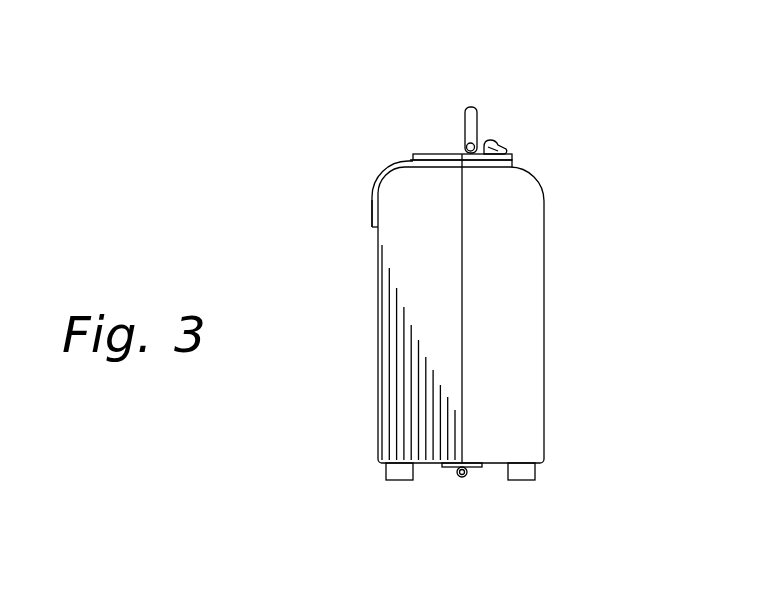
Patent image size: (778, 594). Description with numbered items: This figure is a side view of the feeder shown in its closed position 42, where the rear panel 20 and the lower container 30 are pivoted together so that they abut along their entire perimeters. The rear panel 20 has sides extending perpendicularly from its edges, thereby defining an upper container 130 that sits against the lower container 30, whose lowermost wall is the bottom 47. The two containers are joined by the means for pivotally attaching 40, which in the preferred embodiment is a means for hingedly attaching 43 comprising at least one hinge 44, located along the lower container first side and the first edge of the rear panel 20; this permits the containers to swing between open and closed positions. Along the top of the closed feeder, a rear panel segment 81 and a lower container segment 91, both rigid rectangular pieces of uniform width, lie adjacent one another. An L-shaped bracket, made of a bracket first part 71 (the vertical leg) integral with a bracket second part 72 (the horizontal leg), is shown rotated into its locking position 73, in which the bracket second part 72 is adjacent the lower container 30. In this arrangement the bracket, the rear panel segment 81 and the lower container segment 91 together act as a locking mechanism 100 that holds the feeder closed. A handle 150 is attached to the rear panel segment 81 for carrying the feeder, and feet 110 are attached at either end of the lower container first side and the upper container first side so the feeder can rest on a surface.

The rear panel 20 is at (546, 227).
The lower container 30 is at (377, 316).
The means for pivotally attaching 40 is at (400, 512).
The closed position 42 is at (588, 279).
The means for hingedly attaching 43 is at (443, 510).
The hinge 44 is at (464, 478).
The bottom 47 is at (377, 400).
The bracket first part 71 is at (386, 167).
The bracket second part 72 is at (371, 205).
The locking position 73 is at (348, 74).
The rear panel segment 81 is at (513, 160).
The lower container segment 91 is at (412, 155).
The locking mechanism 100 is at (524, 98).
The foot 110 is at (386, 473).
The upper container 130 is at (556, 350).
The handle 150 is at (470, 106).